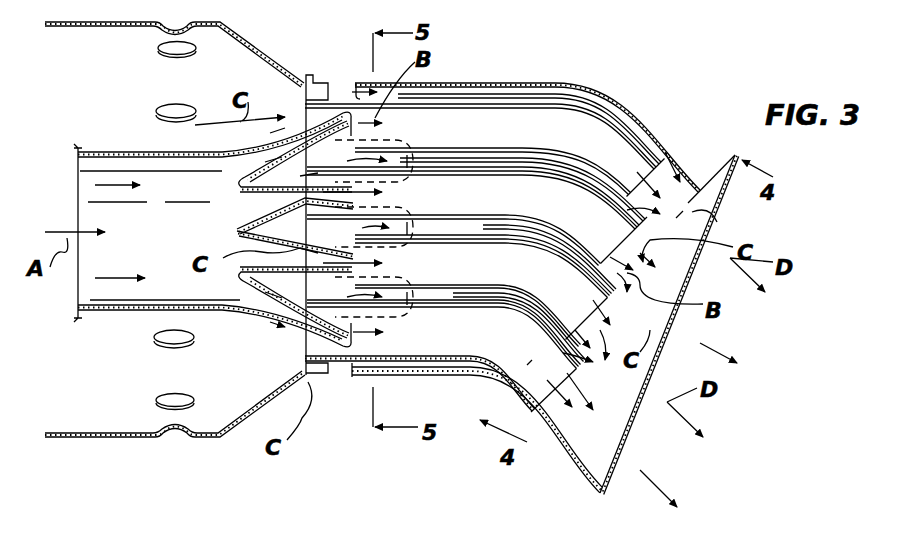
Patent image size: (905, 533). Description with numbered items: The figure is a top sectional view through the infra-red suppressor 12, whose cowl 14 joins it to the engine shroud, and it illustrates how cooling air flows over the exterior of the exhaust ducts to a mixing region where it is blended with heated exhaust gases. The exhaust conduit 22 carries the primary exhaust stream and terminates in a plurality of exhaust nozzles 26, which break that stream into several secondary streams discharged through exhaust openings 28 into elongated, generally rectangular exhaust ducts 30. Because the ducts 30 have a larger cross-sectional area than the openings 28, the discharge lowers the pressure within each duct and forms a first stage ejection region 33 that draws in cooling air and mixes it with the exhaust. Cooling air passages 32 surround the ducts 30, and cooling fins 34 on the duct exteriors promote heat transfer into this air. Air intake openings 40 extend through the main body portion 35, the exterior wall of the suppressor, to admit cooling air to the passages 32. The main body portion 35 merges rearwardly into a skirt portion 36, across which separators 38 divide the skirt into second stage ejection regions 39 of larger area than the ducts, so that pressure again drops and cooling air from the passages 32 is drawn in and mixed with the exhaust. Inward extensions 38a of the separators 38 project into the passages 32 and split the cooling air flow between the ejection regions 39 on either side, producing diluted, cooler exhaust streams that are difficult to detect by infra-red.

The infra-red suppressor 12 is at (652, 121).
The cowl 14 is at (608, 54).
The exhaust conduit 22 is at (127, 152).
The exhaust nozzles 26 is at (290, 318).
The exhaust openings 28 is at (350, 128).
The exhaust ducts 30 is at (577, 127).
The cooling air passages 32 is at (433, 92).
The first stage ejection region 33 is at (393, 333).
The cooling fins 34 is at (497, 102).
The main body portion 35 is at (452, 100).
The skirt portion 36 is at (583, 479).
The separators 38 is at (678, 0).
The inward extensions 38a is at (541, 168).
The second stage ejection regions 39 is at (717, 223).
The air intake openings 40 is at (353, 365).